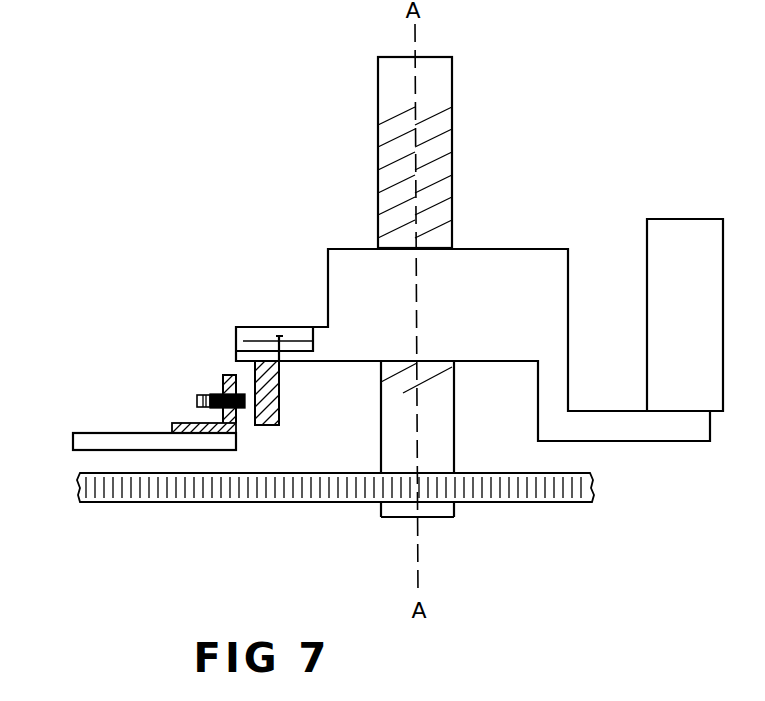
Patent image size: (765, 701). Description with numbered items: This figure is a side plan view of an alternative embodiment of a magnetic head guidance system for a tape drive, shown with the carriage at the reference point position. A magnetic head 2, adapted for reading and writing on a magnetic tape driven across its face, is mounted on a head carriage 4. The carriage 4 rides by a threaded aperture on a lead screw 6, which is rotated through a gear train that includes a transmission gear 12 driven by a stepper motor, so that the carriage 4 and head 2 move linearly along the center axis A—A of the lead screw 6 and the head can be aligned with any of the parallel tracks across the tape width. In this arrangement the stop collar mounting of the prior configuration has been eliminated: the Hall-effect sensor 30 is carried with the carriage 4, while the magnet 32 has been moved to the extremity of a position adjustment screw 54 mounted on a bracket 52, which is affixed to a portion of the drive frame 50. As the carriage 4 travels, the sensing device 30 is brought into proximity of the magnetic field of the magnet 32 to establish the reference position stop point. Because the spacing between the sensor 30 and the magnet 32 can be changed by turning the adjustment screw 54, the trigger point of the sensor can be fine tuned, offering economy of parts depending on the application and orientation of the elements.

The magnetic head 2 is at (698, 350).
The head carriage 4 is at (517, 248).
The lead screw 6 is at (452, 88).
The transmission gear 12 is at (215, 504).
The Hall-effect sensor 30 is at (282, 390).
The magnet 32 is at (242, 410).
The drive frame 50 is at (73, 440).
The bracket 52 is at (172, 423).
The position adjustment screw 54 is at (211, 394).